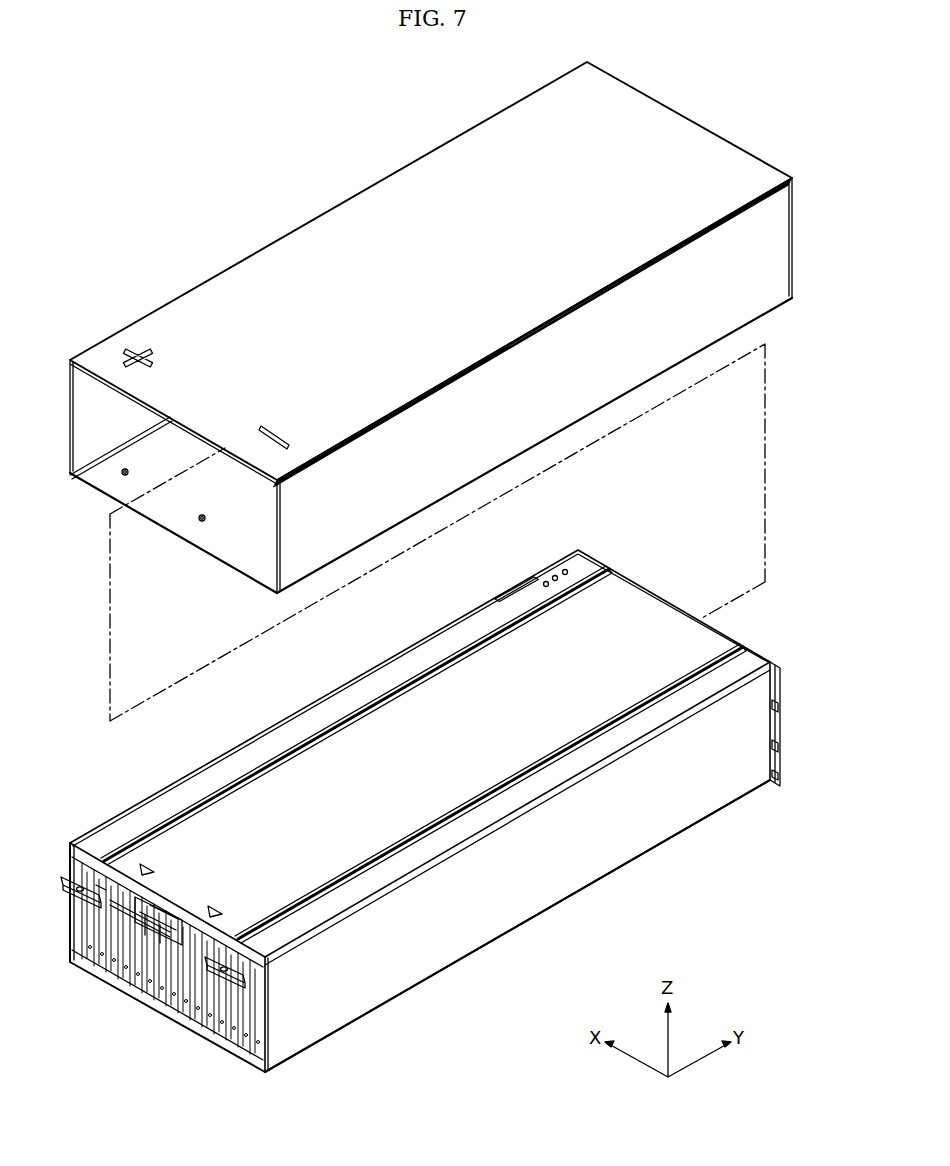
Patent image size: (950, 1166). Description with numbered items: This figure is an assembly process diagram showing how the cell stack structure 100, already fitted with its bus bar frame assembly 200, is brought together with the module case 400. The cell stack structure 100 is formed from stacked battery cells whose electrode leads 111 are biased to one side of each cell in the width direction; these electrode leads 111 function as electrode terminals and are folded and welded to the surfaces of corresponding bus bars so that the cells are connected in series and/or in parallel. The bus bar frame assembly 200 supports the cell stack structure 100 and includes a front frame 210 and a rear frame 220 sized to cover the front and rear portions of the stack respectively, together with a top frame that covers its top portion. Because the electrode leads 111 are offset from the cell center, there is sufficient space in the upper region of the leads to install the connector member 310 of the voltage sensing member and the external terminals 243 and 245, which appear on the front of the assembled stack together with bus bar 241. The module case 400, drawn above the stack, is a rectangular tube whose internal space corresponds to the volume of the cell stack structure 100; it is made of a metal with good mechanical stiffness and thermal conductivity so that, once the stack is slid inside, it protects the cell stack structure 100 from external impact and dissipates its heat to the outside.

The cell stack structure 100 is at (432, 829).
The electrode lead 111 is at (176, 1005).
The bus bar frame assembly 200 is at (453, 829).
The front frame 210 is at (208, 776).
The rear frame 220 is at (781, 718).
The bus bar 241 is at (160, 1012).
The external terminal 243 is at (78, 880).
The external terminal 245 is at (212, 1038).
The connector member 310 is at (138, 945).
The module case 400 is at (311, 209).